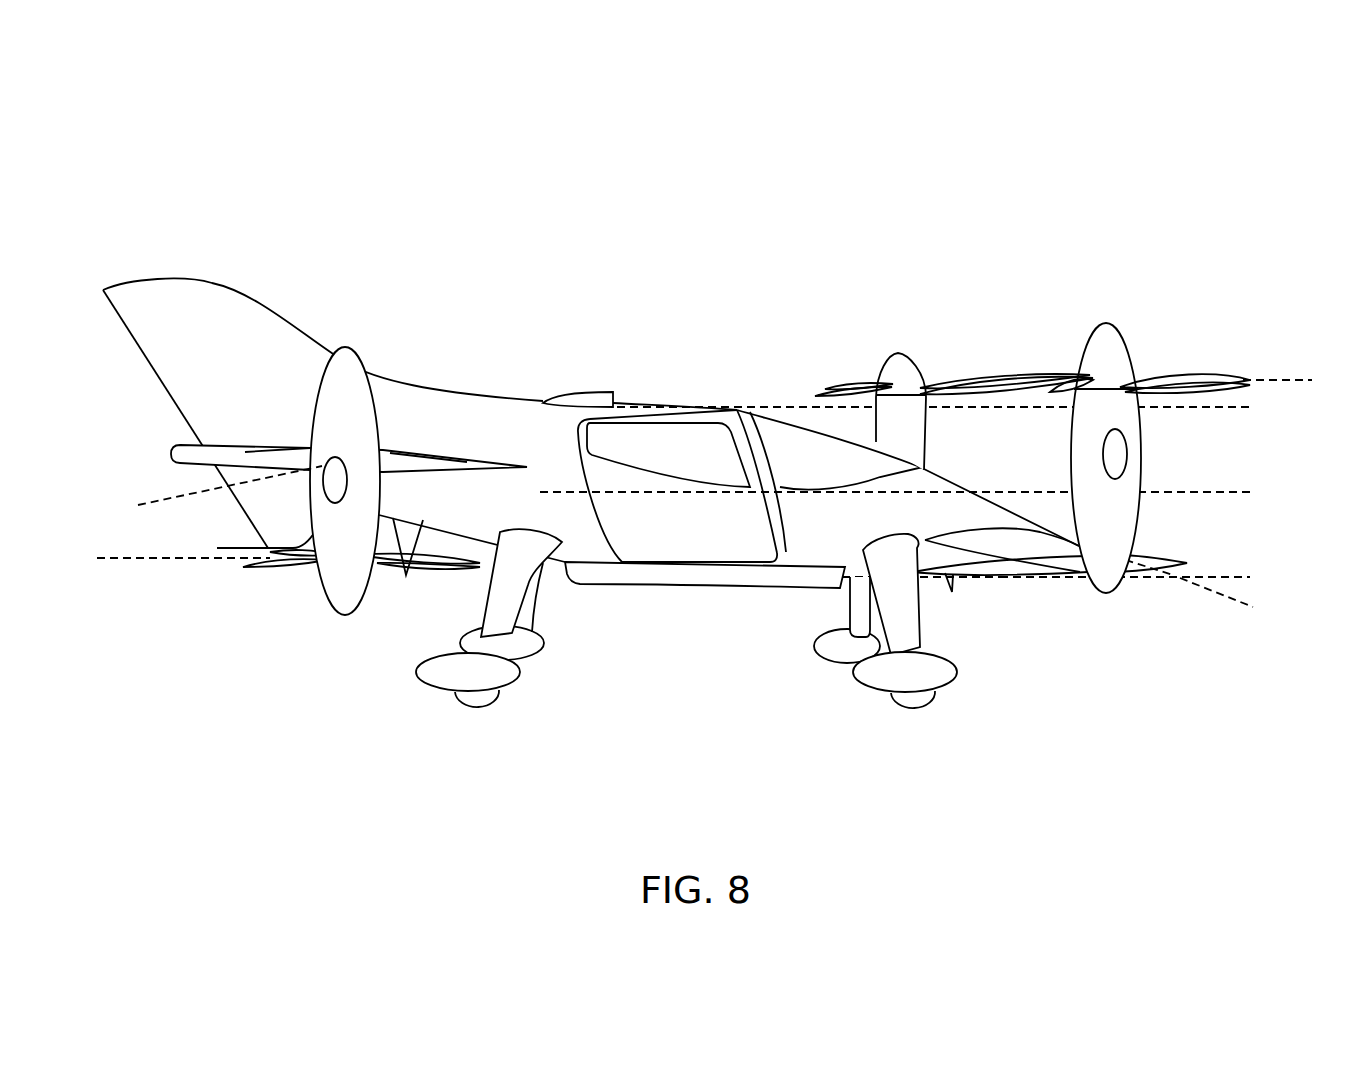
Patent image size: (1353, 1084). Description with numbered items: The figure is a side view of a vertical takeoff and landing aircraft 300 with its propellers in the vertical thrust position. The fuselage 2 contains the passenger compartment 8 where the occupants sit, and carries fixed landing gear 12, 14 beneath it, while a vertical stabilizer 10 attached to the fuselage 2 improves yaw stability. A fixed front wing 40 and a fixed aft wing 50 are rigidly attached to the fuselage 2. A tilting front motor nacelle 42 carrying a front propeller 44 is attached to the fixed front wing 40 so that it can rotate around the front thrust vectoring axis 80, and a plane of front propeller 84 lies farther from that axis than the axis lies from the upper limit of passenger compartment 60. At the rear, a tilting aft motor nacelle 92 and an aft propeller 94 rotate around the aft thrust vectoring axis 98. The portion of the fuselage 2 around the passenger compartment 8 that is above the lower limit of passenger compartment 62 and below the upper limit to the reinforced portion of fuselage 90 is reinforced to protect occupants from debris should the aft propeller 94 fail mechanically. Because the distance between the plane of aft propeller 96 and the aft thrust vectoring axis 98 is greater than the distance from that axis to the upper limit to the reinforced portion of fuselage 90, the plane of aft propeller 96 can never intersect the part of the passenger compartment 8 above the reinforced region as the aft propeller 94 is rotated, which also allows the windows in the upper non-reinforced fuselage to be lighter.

The fuselage 2 is at (653, 398).
The passenger compartment 8 is at (693, 550).
The vertical stabilizer 10 is at (148, 295).
The fixed landing gear 12 is at (480, 710).
The fixed landing gear 14 is at (917, 710).
The fixed front wing 40 is at (1028, 548).
The tilting front motor nacelle 42 is at (907, 418).
The front propeller 44 is at (820, 392).
The fixed aft wing 50 is at (453, 467).
The upper limit of passenger compartment 60 is at (767, 402).
The lower limit of passenger compartment 62 is at (793, 573).
The front thrust vectoring axis 80 is at (1213, 578).
The plane of front propeller 84 is at (1300, 380).
The upper limit to reinforced portion of fuselage 90 is at (1224, 491).
The tilting aft motor nacelle 92 is at (325, 523).
The aft propeller 94 is at (217, 548).
The plane of aft propeller 96 is at (133, 557).
The aft thrust vectoring axis 98 is at (153, 498).
The vertical takeoff and landing aircraft 300 is at (1097, 171).